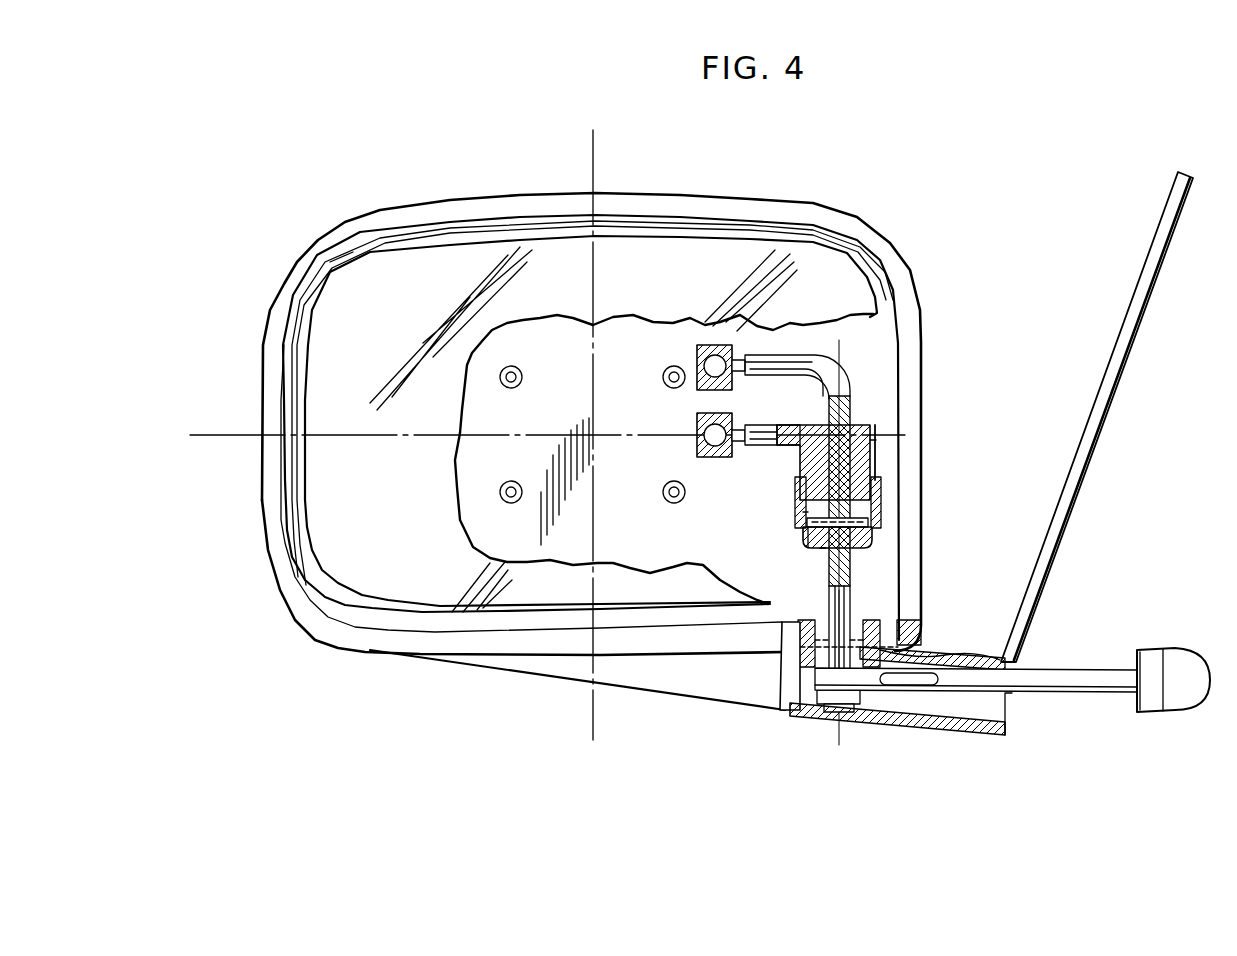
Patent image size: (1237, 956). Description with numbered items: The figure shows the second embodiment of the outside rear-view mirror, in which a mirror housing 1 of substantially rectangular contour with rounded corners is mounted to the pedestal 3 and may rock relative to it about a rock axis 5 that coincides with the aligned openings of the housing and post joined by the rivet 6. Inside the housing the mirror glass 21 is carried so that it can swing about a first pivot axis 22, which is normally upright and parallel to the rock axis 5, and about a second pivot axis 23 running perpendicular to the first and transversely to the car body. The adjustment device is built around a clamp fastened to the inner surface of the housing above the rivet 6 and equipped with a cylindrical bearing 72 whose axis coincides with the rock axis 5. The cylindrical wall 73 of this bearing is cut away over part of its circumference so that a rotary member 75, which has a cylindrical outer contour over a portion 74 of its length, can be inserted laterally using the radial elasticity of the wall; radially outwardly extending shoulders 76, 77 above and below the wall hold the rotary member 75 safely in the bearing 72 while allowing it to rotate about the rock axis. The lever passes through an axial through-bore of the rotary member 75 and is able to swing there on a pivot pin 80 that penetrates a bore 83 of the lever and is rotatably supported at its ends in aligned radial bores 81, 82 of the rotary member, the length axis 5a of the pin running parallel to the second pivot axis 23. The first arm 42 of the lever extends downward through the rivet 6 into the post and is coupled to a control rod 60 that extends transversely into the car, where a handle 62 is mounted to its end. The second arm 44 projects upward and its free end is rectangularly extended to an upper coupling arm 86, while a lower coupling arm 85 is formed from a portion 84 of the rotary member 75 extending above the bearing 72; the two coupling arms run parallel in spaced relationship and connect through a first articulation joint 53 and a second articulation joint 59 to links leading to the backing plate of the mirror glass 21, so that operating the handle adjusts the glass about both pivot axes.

The mirror housing 1 is at (905, 272).
The pedestal 3 is at (1135, 275).
The rock axis 5 is at (858, 345).
The length axis of pivot pin 5a is at (826, 562).
The rivet 6 is at (915, 630).
The mirror glass 21 is at (388, 597).
The first pivot axis 22 is at (593, 150).
The second pivot axis 23 is at (393, 438).
The first arm 42 is at (850, 600).
The second arm 44 is at (860, 403).
The first articulation joint 53 is at (706, 345).
The second articulation joint 59 is at (695, 448).
The control rod 60 is at (1080, 675).
The handle 62 is at (1190, 648).
The cylindrical bearing 72 is at (884, 500).
The cylindrical wall 73 is at (804, 518).
The cylindrical portion 74 is at (878, 440).
The rotary member 75 is at (872, 440).
The upper shoulder 76 is at (882, 478).
The lower shoulder 77 is at (800, 457).
The pivot pin 80 is at (870, 520).
The radial bore 81 is at (876, 548).
The radial bore 82 is at (822, 550).
The bore of lever 83 is at (806, 524).
The portion of rotary member 84 is at (860, 427).
The lower coupling arm 85 is at (760, 433).
The upper coupling arm 86 is at (775, 358).